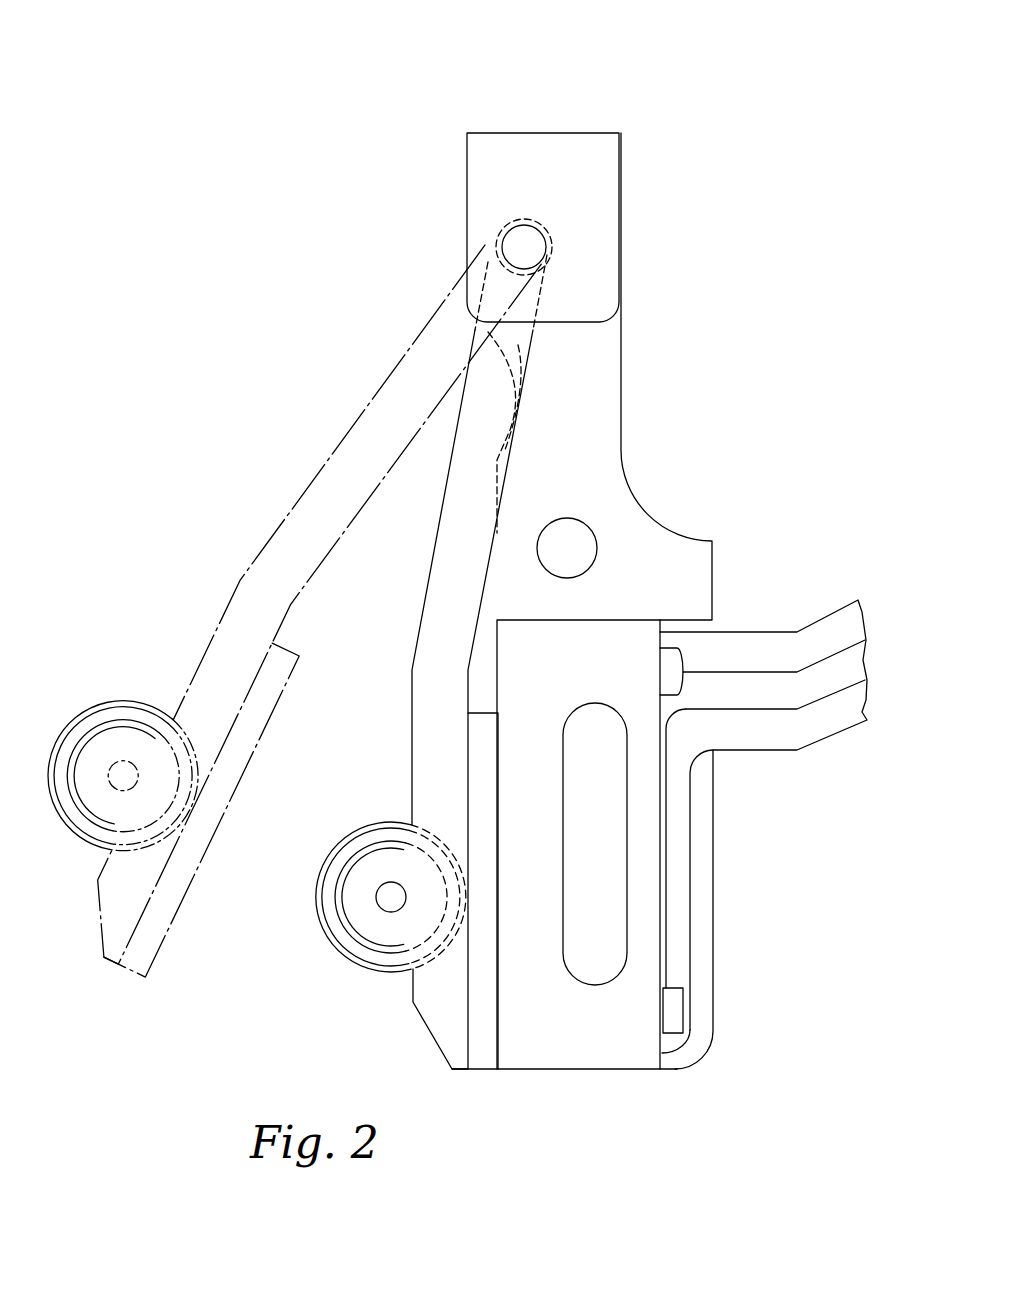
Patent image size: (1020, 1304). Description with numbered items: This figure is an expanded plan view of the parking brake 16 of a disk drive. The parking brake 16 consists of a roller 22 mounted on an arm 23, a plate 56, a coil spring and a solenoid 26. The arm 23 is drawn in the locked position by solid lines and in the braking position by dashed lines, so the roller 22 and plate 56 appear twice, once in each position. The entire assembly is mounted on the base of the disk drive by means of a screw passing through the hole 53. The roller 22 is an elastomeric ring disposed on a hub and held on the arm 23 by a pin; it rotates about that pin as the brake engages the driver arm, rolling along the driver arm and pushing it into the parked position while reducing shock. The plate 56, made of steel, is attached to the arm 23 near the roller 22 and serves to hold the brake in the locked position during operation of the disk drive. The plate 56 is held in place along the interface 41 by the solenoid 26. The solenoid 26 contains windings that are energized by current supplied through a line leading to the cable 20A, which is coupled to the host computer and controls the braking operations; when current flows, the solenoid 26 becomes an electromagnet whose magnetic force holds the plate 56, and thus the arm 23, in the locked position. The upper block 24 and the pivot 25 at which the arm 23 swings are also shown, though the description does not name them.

The parking brake 16 is at (630, 343).
The upper mounting block 24 is at (613, 248).
The pivot pin 25 is at (524, 248).
The hole 53 is at (582, 540).
The solenoid 26 is at (632, 1029).
The interface 41 is at (498, 1070).
The cable 20A is at (768, 635).
The arm 23 is at (428, 670).
The plate 56 is at (482, 1048).
The roller 22 is at (362, 825).